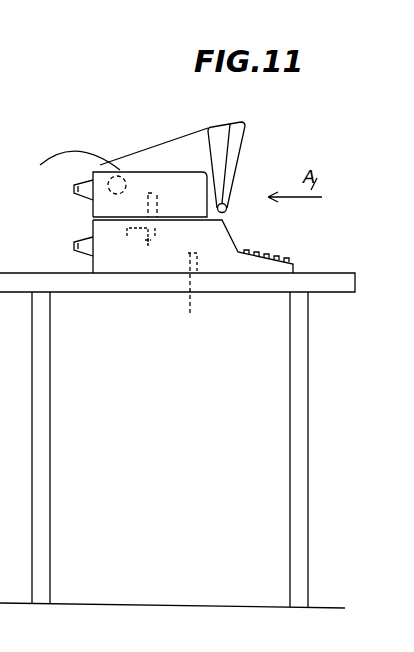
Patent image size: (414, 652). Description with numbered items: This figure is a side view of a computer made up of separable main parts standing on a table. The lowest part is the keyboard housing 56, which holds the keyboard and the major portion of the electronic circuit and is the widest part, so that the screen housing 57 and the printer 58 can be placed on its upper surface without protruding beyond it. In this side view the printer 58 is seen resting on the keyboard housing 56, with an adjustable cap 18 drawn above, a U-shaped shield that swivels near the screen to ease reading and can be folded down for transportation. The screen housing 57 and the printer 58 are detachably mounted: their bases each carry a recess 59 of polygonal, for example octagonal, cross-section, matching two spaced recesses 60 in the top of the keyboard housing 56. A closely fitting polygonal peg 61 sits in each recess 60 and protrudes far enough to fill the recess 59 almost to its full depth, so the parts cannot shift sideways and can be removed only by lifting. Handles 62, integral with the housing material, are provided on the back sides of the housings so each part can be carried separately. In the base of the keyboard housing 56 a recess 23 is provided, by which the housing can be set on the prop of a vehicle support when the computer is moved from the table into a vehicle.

The adjustable cap 18 is at (257, 140).
The recess 23 is at (177, 430).
The keyboard housing 56 is at (118, 263).
The screen housing 57 is at (173, 153).
The printer 58 is at (110, 203).
The recess 59 is at (157, 202).
The recess 60 is at (131, 242).
The peg 61 is at (153, 255).
The handle 62 is at (72, 188).